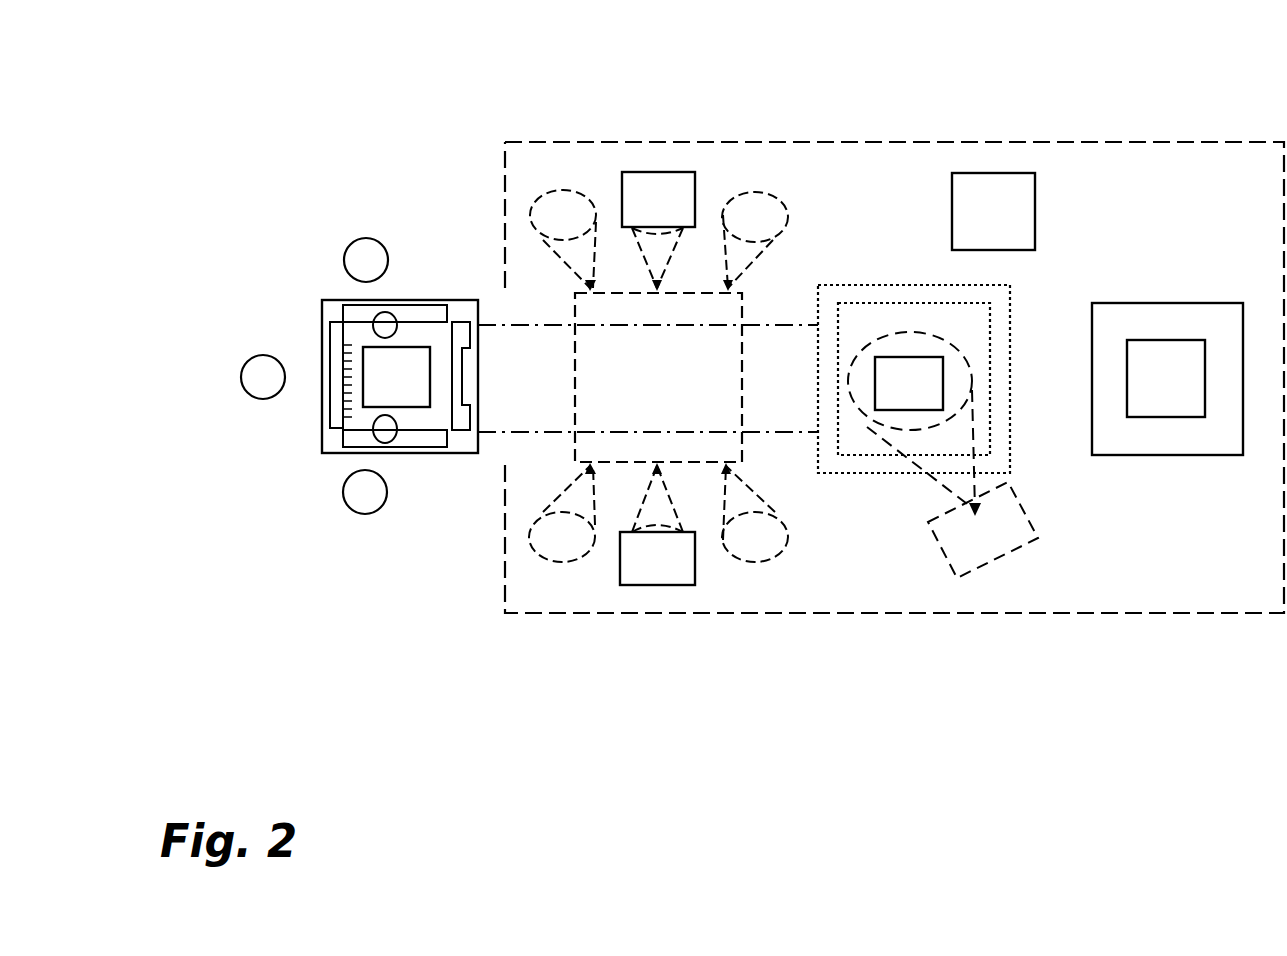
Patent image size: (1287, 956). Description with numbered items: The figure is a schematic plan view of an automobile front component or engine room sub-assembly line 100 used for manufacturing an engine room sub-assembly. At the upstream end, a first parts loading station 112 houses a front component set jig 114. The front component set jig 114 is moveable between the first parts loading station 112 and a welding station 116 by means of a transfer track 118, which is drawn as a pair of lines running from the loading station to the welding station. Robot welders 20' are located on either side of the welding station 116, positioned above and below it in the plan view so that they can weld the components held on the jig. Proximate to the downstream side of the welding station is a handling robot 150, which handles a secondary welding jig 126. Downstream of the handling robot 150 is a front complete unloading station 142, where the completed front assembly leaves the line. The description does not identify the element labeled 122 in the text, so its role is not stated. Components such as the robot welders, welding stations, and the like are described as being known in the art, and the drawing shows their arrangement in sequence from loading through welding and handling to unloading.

The engine room sub-assembly line 100 is at (400, 172).
The first parts loading station 112 is at (470, 300).
The front component set jig 114 is at (396, 377).
The transfer track 118 is at (497, 432).
The welding station 116 is at (742, 452).
The robot welders 20' is at (658, 378).
The secondary welding jig 126 is at (863, 292).
The processing station 122 is at (910, 381).
The handling robot 150 is at (937, 482).
The front complete unloading station 142 is at (1166, 455).